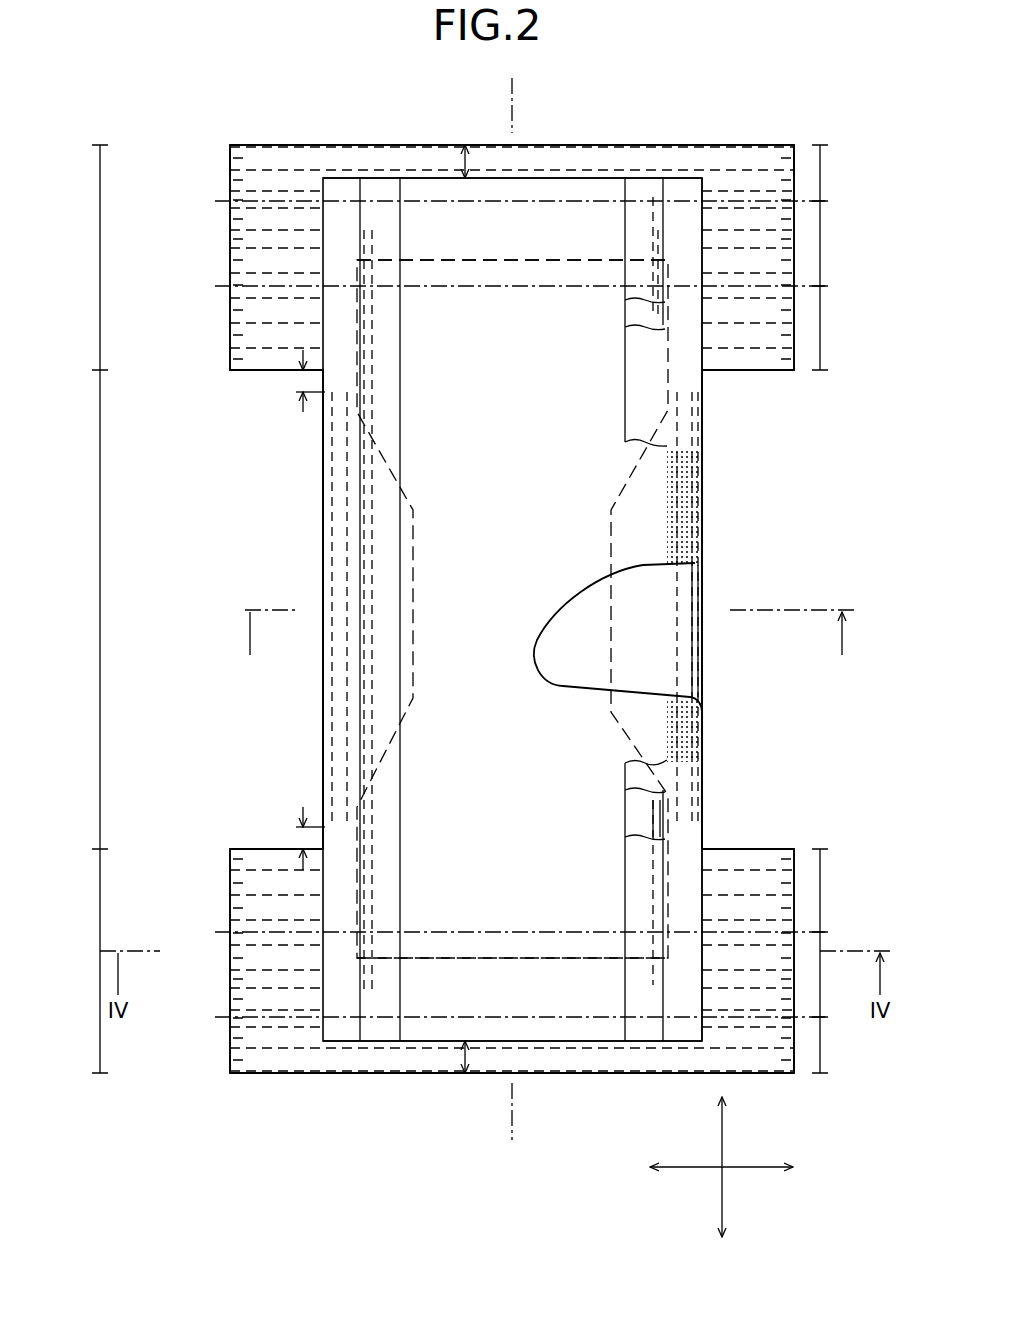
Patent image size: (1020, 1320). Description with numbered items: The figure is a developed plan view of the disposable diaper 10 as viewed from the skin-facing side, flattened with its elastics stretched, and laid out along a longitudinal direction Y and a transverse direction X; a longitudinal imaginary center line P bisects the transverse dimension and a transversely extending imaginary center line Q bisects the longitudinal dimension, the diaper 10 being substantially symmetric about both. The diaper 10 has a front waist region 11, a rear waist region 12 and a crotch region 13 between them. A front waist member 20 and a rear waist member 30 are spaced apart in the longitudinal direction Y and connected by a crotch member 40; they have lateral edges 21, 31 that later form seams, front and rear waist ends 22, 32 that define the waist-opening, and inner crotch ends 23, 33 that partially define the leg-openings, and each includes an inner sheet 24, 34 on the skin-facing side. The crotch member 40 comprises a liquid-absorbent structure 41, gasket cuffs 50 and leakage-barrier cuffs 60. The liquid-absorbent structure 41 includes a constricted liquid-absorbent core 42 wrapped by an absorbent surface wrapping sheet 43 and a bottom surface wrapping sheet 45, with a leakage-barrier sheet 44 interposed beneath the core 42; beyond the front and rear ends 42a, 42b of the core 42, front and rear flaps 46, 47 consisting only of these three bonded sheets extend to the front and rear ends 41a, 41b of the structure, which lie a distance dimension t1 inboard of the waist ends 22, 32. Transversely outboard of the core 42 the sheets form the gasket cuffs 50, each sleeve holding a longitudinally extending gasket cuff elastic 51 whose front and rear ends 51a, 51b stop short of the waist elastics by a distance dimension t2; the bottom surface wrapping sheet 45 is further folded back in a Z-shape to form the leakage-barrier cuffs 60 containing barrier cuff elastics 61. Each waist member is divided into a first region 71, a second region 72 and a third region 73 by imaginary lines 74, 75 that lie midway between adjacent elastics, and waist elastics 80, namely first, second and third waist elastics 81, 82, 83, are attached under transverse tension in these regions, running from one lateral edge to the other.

The disposable diaper 10 is at (722, 120).
The front waist region 11 is at (100, 950).
The rear waist region 12 is at (100, 247).
The crotch region 13 is at (100, 580).
The front waist member 20 is at (213, 860).
The lateral edges of front waist member 21 is at (230, 1058).
The front waist end 22 is at (262, 1073).
The front crotch end 23 is at (250, 849).
The inner sheet of front waist member 24 is at (740, 862).
The rear waist member 30 is at (215, 368).
The lateral edges of rear waist member 31 is at (230, 162).
The rear waist end 32 is at (262, 145).
The rear crotch end 33 is at (255, 372).
The inner sheet of rear waist member 34 is at (745, 332).
The crotch member 40 is at (298, 492).
The liquid-absorbent structure 41 is at (742, 503).
The front end of liquid-absorbent structure 41a is at (540, 1073).
The rear end of liquid-absorbent structure 41b is at (545, 178).
The liquid-absorbent core 42 is at (592, 610).
The front end of core 42a is at (540, 958).
The rear end of core 42b is at (535, 262).
The absorbent surface wrapping sheet 43 is at (632, 508).
The leakage-barrier sheet 44 is at (667, 593).
The bottom surface wrapping sheet 45 is at (695, 600).
The front flap 46 is at (425, 1015).
The rear flap 47 is at (425, 215).
The gasket cuffs 50 is at (338, 712).
The gasket cuff elastic 51 is at (332, 582).
The front end of gasket cuff elastic 51a is at (320, 812).
The rear end of gasket cuff elastic 51b is at (320, 395).
The leakage-barrier cuffs 60 is at (385, 562).
The barrier cuff elastics 61 is at (372, 526).
The first region 71 is at (822, 178).
The second region 72 is at (822, 246).
The third region 73 is at (822, 330).
The imaginary line 74 is at (468, 203).
The imaginary line 75 is at (485, 288).
The waist elastics 80 is at (462, 609).
The first waist elastics 81 is at (240, 195).
The second waist elastics 82 is at (240, 235).
The third waist elastics 83 is at (481, 585).
The distance dimension t1 is at (463, 162).
The distance dimension t2 is at (303, 392).
The longitudinal imaginary center line P is at (514, 85).
The transversely extending imaginary center line Q is at (250, 610).
The transverse direction X is at (752, 1168).
The longitudinal direction Y is at (722, 1133).